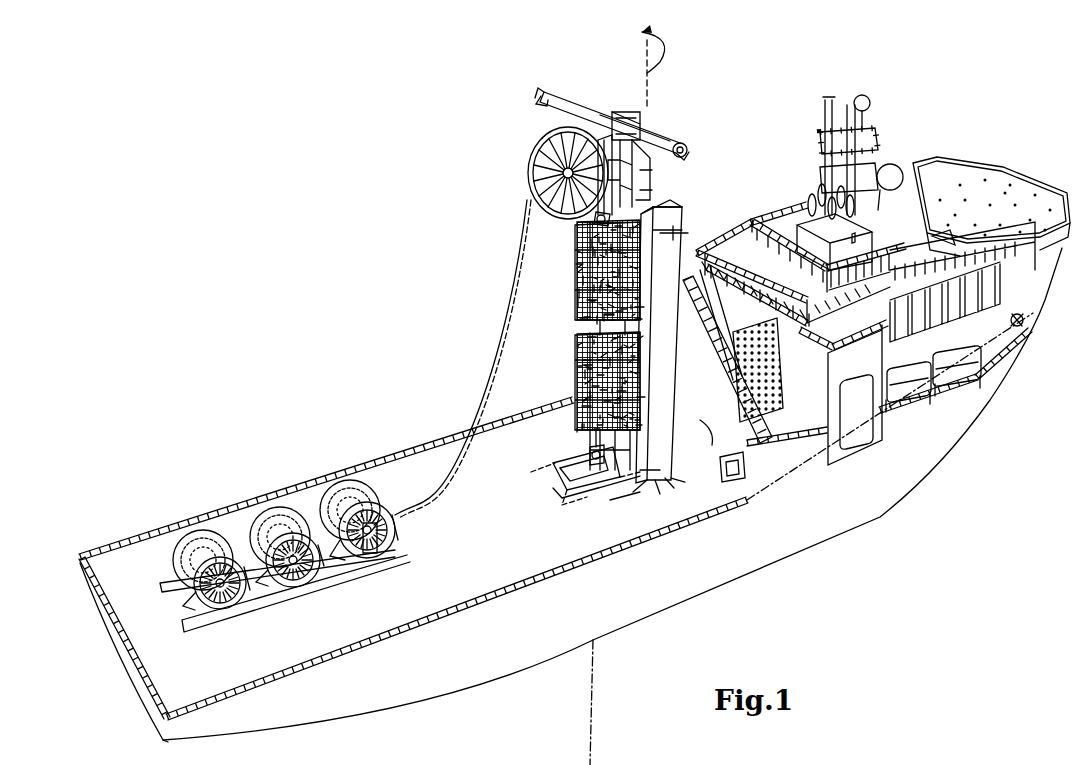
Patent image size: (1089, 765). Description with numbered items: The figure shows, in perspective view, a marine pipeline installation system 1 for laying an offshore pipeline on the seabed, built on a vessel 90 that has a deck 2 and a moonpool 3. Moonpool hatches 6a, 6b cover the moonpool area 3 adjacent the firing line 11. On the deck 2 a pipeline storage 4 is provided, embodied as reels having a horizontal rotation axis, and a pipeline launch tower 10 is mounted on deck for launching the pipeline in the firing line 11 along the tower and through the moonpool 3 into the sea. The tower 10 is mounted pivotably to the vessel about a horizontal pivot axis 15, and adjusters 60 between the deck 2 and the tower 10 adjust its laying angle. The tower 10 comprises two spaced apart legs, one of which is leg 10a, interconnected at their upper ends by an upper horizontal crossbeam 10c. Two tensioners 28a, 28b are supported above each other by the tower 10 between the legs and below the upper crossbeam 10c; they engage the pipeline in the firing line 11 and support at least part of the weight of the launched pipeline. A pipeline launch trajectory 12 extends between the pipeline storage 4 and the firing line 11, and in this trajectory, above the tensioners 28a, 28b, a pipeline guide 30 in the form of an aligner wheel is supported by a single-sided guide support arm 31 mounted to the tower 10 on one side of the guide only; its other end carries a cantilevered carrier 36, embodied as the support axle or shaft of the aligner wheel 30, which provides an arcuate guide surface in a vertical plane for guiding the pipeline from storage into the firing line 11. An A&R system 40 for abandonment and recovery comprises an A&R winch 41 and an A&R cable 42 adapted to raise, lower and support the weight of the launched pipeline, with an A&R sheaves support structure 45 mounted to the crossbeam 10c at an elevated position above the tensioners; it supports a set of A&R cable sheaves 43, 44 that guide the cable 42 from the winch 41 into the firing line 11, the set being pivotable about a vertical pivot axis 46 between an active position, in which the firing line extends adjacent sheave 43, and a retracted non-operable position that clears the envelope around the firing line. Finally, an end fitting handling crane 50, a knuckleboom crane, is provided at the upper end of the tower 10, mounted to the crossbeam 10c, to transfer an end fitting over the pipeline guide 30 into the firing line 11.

The marine pipeline installation system 1 is at (707, 73).
The deck 2 is at (413, 558).
The moonpool 3 is at (561, 484).
The pipeline storage 4 is at (240, 530).
The moonpool hatch 6a is at (595, 488).
The moonpool hatch 6b is at (627, 468).
The pipeline launch tower 10 is at (692, 218).
The leg 10a is at (673, 233).
The upper horizontal crossbeam 10c is at (650, 198).
The firing line 11 is at (600, 220).
The pipeline launch trajectory 12 is at (502, 337).
The horizontal pivot axis 15 is at (656, 480).
The tensioner 28a is at (575, 371).
The tensioner 28b is at (575, 286).
The pipeline guide 30 is at (538, 147).
The guide support arm 31 is at (617, 175).
The cantilevered carrier 36 is at (555, 170).
The A&R system 40 is at (657, 113).
The A&R winch 41 is at (735, 480).
The A&R cable 42 is at (658, 130).
The A&R cable sheave 43 is at (626, 112).
The A&R cable sheave 44 is at (690, 147).
The A&R sheaves support structure 45 is at (652, 185).
The vertical pivot axis 46 is at (655, 70).
The end fitting handling crane 50 is at (572, 87).
The adjusters 60 is at (700, 415).
The vessel 90 is at (571, 506).